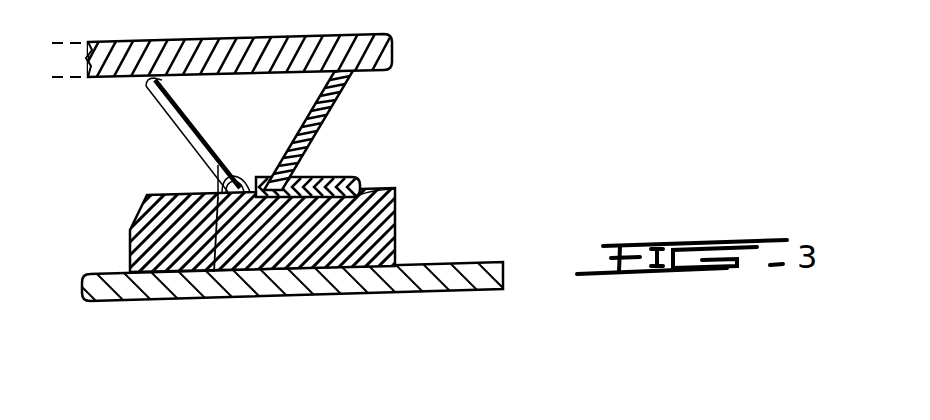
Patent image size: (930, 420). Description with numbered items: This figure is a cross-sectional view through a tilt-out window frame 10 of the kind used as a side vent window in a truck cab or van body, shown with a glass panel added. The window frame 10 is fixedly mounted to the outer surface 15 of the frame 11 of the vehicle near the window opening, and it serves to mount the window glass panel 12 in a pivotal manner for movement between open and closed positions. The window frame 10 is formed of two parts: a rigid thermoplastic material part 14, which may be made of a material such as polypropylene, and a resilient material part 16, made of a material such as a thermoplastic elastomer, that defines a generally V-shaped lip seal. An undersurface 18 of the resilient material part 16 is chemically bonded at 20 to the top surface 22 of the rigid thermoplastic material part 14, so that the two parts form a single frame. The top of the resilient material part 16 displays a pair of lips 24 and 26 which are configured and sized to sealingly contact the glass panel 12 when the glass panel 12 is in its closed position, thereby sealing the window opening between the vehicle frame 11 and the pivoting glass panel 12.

The tilt-out window frame 10 is at (498, 112).
The frame of the vehicle 11 is at (377, 280).
The window glass panel 12 is at (370, 52).
The rigid thermoplastic material part 14 is at (392, 237).
The outer surface 15 is at (446, 292).
The resilient material part 16 is at (285, 166).
The undersurface 18 is at (390, 193).
The chemical bond 20 is at (212, 165).
The top surface 22 is at (210, 273).
The lip 24 is at (177, 107).
The lip 26 is at (332, 108).